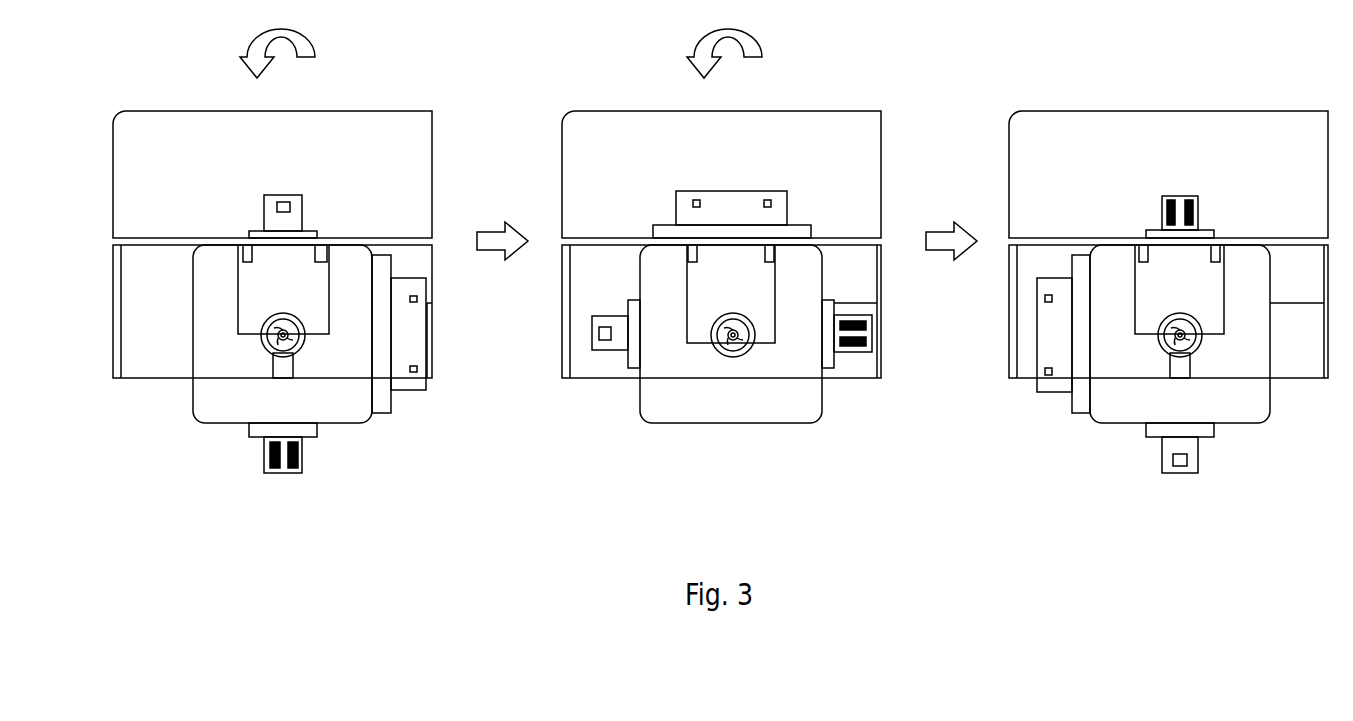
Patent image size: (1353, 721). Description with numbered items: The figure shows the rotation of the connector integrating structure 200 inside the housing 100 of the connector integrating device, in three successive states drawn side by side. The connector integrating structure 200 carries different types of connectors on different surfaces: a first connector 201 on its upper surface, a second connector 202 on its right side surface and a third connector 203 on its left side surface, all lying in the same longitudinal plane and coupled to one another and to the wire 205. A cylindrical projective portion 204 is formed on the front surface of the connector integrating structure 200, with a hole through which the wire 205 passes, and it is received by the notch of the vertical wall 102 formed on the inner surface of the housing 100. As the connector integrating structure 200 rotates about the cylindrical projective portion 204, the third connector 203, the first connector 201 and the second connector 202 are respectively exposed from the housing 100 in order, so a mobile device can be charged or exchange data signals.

The housing 100 is at (398, 150).
The vertical wall 102 is at (273, 273).
The connector integrating structure 200 is at (373, 457).
The first connector 201 is at (415, 328).
The second connector 202 is at (283, 464).
The third connector 203 is at (297, 218).
The cylindrical projective portion 204 is at (281, 337).
The wire 205 is at (270, 350).